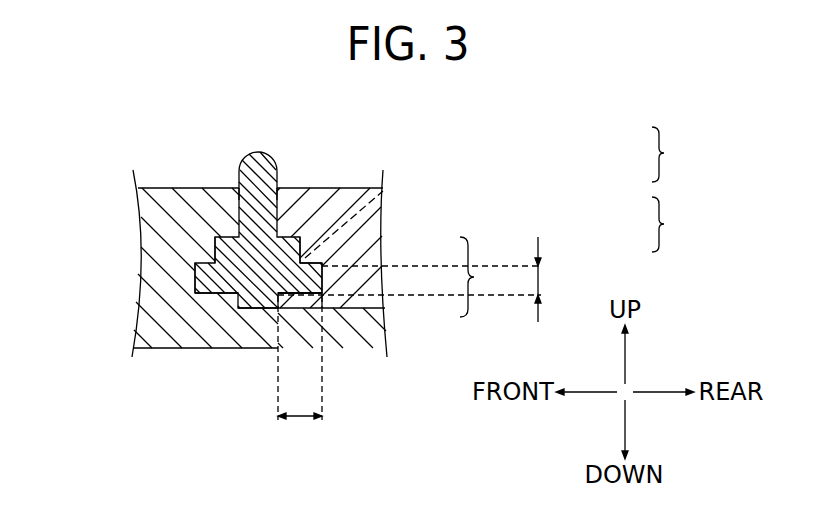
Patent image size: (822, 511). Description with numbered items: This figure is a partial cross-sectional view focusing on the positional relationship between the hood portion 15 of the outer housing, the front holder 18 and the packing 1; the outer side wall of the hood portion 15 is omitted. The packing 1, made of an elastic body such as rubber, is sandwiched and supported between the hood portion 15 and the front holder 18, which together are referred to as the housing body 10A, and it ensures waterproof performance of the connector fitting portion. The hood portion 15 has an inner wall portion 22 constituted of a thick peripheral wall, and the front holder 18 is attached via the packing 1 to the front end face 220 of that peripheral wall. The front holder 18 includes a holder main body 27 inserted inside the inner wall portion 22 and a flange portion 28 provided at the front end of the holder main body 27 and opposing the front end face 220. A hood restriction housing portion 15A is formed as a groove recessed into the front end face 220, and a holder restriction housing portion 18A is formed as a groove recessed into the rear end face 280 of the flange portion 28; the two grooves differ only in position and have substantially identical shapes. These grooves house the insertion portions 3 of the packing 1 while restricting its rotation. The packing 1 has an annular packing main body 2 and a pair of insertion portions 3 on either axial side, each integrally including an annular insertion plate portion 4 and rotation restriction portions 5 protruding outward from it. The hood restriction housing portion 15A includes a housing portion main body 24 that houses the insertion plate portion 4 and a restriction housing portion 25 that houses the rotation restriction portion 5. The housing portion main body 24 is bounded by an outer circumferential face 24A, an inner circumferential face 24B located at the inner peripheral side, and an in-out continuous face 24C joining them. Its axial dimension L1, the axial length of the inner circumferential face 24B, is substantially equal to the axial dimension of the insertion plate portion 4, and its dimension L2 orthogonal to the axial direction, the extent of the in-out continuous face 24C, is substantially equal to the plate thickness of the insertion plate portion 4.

The packing 1 is at (261, 151).
The packing main body 2 is at (262, 165).
The insertion portion 3 is at (659, 154).
The insertion plate portion 4 is at (222, 290).
The rotation restriction portion 5 is at (216, 252).
The housing body 10A is at (667, 224).
The hood portion 15 is at (385, 210).
The hood restriction housing portion 15A is at (326, 320).
The front holder 18 is at (138, 208).
The holder restriction housing portion 18A is at (216, 284).
The inner wall portion 22 is at (356, 189).
The housing portion main body 24 is at (474, 277).
The outer circumferential face 24A is at (320, 263).
The inner circumferential face 24B is at (352, 306).
The in-out continuous face 24C is at (326, 280).
The restriction housing portion 25 is at (389, 193).
The holder main body 27 is at (372, 332).
The flange portion 28 is at (167, 317).
The front end face 220 is at (272, 190).
The rear end face 280 is at (242, 190).
The axial dimension L1 is at (300, 358).
The dimension in direction orthogonal to axial direction L2 is at (424, 279).